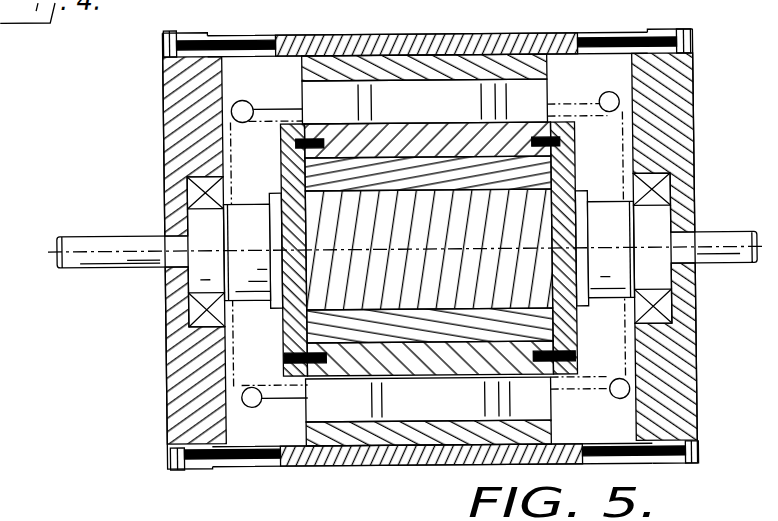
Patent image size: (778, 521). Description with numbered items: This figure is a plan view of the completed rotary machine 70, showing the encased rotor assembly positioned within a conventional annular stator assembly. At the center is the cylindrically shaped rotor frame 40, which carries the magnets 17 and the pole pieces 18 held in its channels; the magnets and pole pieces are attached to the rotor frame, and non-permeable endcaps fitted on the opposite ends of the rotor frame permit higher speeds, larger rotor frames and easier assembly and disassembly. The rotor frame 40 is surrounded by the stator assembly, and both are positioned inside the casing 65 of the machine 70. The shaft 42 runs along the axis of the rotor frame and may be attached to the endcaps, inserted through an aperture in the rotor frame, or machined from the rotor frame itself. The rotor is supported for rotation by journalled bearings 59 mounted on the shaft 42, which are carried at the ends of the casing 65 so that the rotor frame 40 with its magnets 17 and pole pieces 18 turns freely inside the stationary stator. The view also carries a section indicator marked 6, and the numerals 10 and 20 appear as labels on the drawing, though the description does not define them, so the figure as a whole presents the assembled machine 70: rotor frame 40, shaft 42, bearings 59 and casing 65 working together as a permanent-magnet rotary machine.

The electric motor 10 is at (212, 510).
The section line 6- 6 is at (419, 10).
The magnets 17 is at (354, 170).
The pole pieces 18 is at (449, 133).
The stator 20 is at (530, 55).
The rotor frame 40 is at (447, 246).
The shaft 42 is at (131, 262).
The journalled bearings 59 is at (197, 190).
The casing 65 is at (445, 34).
The machine 70 is at (158, 150).